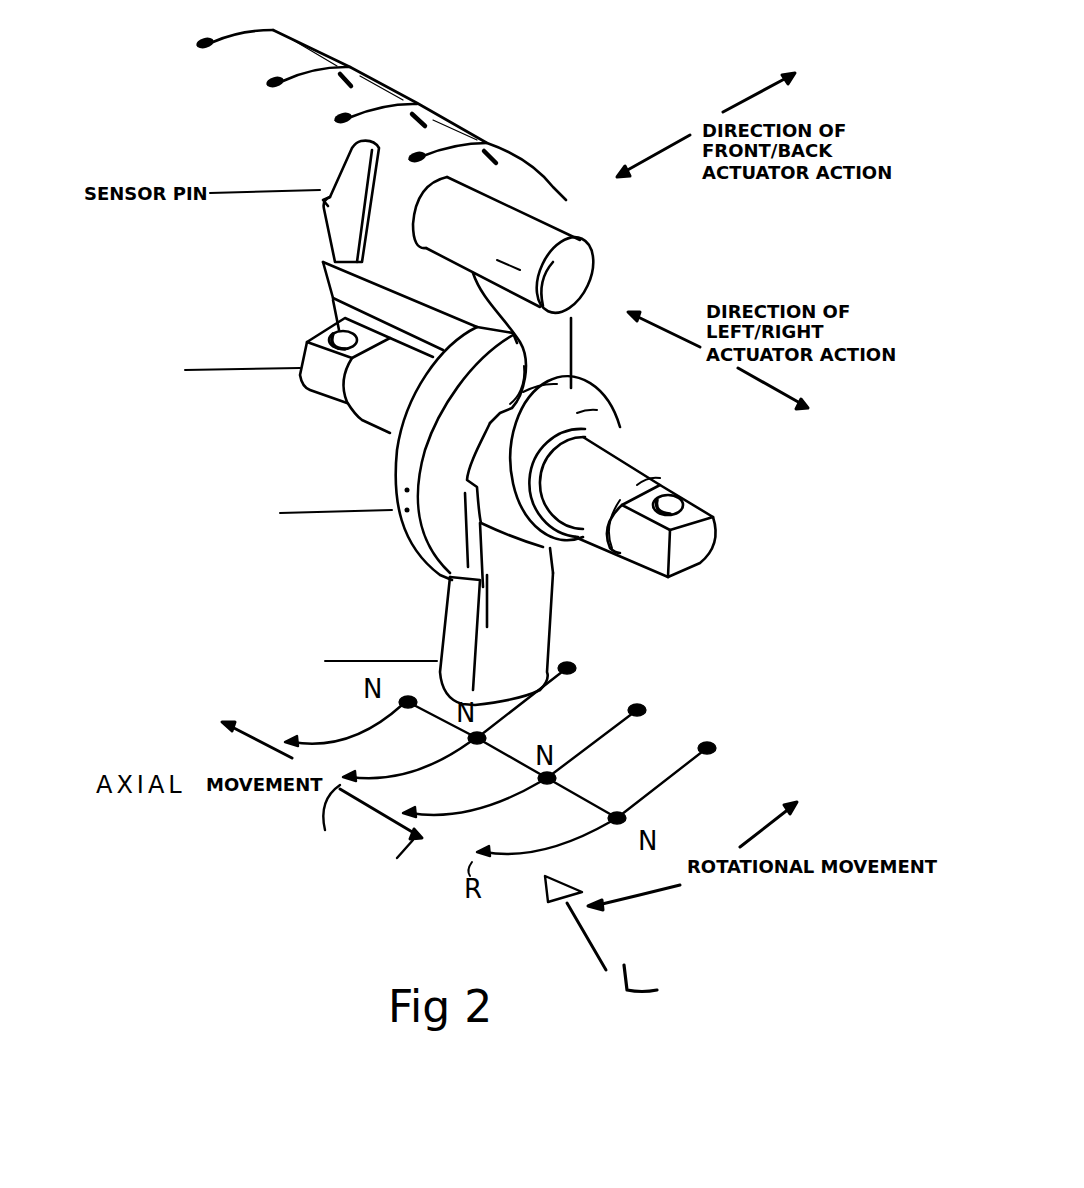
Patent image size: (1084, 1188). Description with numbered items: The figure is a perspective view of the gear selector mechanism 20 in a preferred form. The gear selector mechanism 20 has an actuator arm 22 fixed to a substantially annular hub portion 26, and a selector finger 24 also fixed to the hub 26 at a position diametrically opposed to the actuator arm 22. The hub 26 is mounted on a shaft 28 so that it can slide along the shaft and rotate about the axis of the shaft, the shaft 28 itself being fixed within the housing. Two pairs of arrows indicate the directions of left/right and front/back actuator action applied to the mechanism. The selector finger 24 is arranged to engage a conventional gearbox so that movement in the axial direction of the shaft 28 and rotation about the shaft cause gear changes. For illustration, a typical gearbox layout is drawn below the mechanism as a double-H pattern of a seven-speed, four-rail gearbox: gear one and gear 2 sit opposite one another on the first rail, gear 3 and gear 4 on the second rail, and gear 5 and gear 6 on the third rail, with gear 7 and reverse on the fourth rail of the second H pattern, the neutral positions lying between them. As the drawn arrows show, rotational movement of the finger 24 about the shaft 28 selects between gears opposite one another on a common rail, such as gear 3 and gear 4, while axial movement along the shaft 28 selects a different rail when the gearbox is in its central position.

The gear selector mechanism 20 is at (538, 102).
The actuator arm 22 is at (600, 333).
The selector finger 24 is at (545, 608).
The hub portion 26 is at (394, 472).
The shaft 28 is at (300, 350).
The gear 2 is at (331, 715).
The gear 3 is at (577, 666).
The gear 4 is at (398, 793).
The gear 5 is at (647, 710).
The gear 6 is at (469, 825).
The gear 7 is at (715, 747).